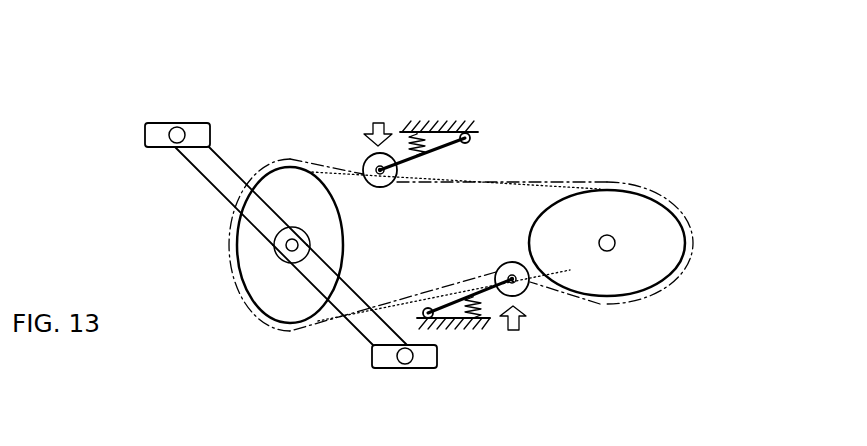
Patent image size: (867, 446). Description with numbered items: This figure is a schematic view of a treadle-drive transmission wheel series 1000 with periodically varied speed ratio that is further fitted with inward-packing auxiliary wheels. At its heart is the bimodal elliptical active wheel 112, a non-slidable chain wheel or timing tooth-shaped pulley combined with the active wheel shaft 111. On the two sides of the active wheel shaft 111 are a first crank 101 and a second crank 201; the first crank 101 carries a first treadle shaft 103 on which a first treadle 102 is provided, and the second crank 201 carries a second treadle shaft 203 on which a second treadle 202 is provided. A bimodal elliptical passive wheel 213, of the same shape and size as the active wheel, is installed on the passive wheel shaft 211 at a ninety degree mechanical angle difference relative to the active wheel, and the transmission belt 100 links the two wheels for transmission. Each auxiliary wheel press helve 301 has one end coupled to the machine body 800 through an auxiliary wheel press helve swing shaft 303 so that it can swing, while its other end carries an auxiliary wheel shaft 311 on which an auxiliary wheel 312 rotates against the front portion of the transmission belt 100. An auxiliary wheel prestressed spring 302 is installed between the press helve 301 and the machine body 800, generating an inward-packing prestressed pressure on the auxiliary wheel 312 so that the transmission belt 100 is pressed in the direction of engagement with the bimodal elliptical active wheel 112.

The transmission belt 100 is at (532, 185).
The belt transmission system 1000 is at (591, 183).
The first crank 101 is at (238, 170).
The first treadle 102 is at (143, 133).
The first treadle shaft 103 is at (184, 136).
The active wheel shaft 111 is at (274, 253).
The bimodal elliptical active wheel 112 is at (240, 293).
The second crank 201 is at (345, 317).
The second treadle 202 is at (438, 360).
The second treadle shaft 203 is at (406, 353).
The passive wheel shaft 211 is at (615, 247).
The bimodal elliptical passive wheel 213 is at (663, 282).
The machine body 800 is at (442, 236).
The auxiliary wheel press helve 301 is at (448, 152).
The auxiliary wheel prestressed spring 302 is at (408, 150).
The auxiliary wheel press helve swing shaft 303 is at (470, 143).
The auxiliary wheel shaft 311 is at (374, 185).
The auxiliary wheel 312 is at (363, 160).